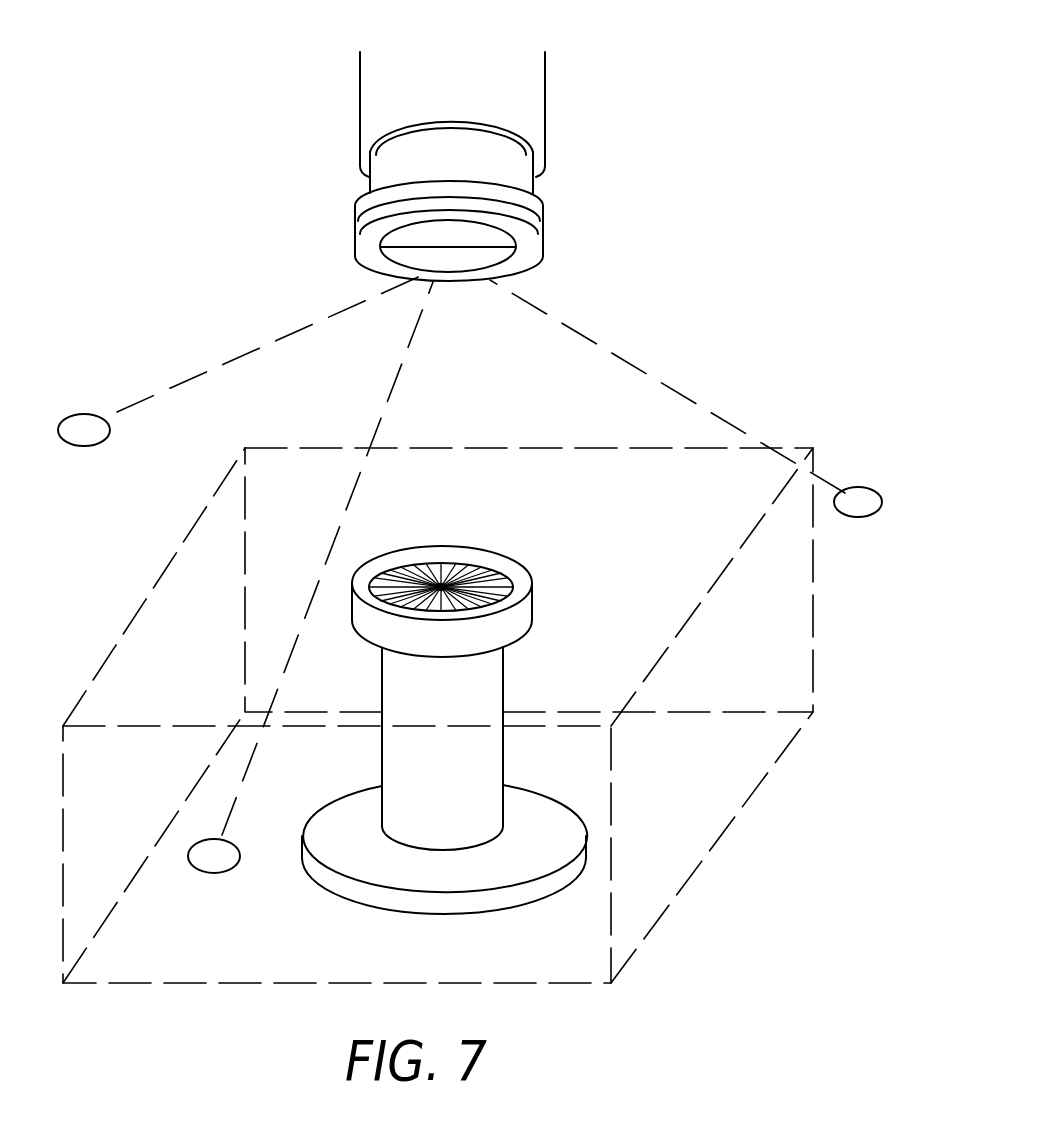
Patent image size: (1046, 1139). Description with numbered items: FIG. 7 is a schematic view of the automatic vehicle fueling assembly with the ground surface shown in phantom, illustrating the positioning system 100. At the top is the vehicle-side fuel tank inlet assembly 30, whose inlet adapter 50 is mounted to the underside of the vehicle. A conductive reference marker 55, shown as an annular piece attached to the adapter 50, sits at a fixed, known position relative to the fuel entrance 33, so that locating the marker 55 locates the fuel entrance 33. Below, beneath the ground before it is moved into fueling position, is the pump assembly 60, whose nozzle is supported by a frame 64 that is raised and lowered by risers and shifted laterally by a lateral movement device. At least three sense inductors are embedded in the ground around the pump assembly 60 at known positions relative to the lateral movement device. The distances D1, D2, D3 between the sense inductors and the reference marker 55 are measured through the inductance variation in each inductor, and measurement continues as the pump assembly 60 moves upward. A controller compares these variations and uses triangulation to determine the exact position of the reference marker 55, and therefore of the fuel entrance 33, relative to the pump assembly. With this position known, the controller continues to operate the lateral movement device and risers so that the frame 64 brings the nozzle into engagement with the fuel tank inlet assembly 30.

The fuel tank inlet assembly 30 is at (560, 83).
The inlet adapter 50 is at (375, 183).
The conductive reference marker 55 is at (535, 197).
The fuel entrance 33 is at (433, 283).
The positioning system 100 is at (470, 573).
The distance D1 is at (192, 378).
The distance D2 is at (336, 541).
The distance D3 is at (647, 373).
The pump assembly 60 is at (587, 538).
The frame 64 is at (557, 836).